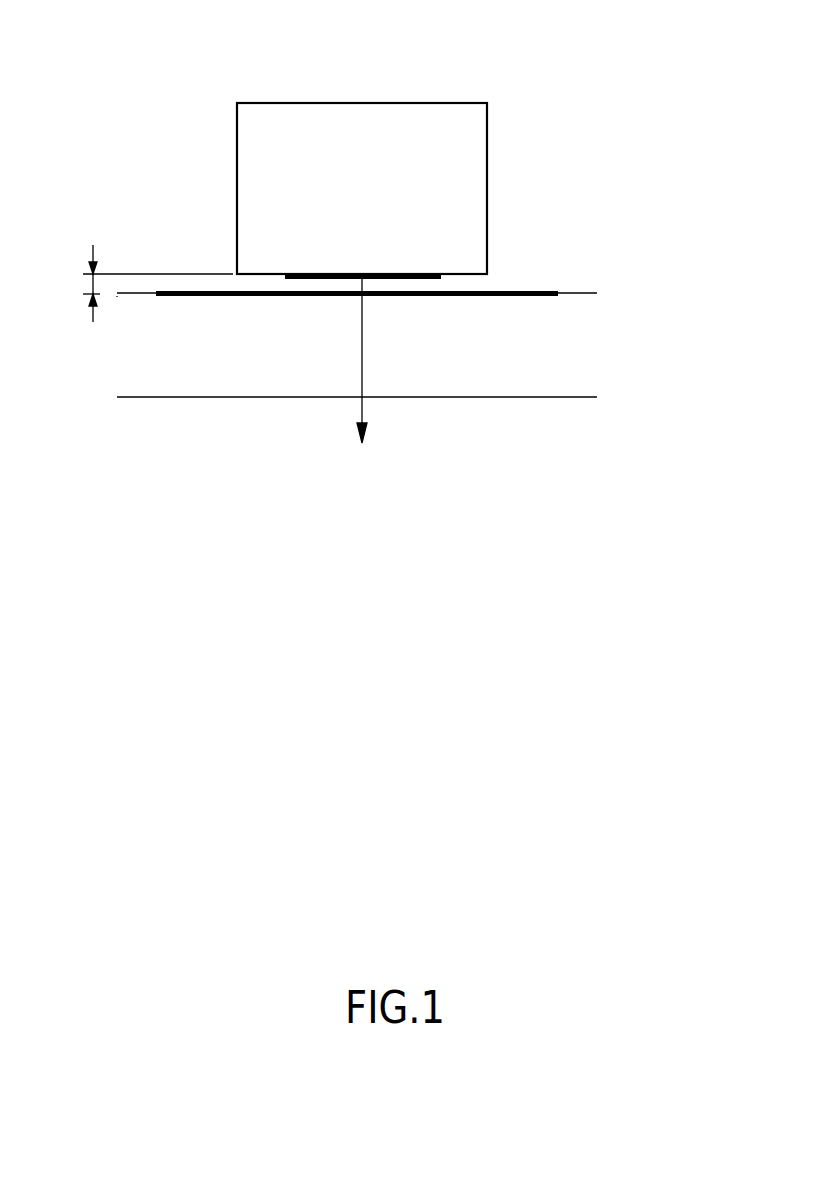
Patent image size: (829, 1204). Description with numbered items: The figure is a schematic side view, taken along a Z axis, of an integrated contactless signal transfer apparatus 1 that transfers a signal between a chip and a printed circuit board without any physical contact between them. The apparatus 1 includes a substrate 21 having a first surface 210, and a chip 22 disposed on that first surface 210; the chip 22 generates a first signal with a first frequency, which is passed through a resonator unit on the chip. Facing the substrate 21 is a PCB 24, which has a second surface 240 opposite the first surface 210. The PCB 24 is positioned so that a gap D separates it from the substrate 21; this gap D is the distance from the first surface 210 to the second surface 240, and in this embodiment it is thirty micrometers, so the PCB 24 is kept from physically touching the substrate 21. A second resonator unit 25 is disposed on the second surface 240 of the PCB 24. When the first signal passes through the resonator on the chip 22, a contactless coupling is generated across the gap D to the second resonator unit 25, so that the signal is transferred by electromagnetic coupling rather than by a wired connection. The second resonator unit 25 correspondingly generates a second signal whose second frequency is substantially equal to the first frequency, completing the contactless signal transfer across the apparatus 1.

The integrated contactless signal transfer apparatus 1 is at (215, 73).
The substrate 21 is at (487, 152).
The first surface 210 is at (472, 279).
The chip 22 is at (288, 275).
The PCB 24 is at (533, 378).
The second surface 240 is at (590, 293).
The second resonator unit 25 is at (167, 296).
The gap D is at (86, 284).
The Z axis Z is at (363, 380).